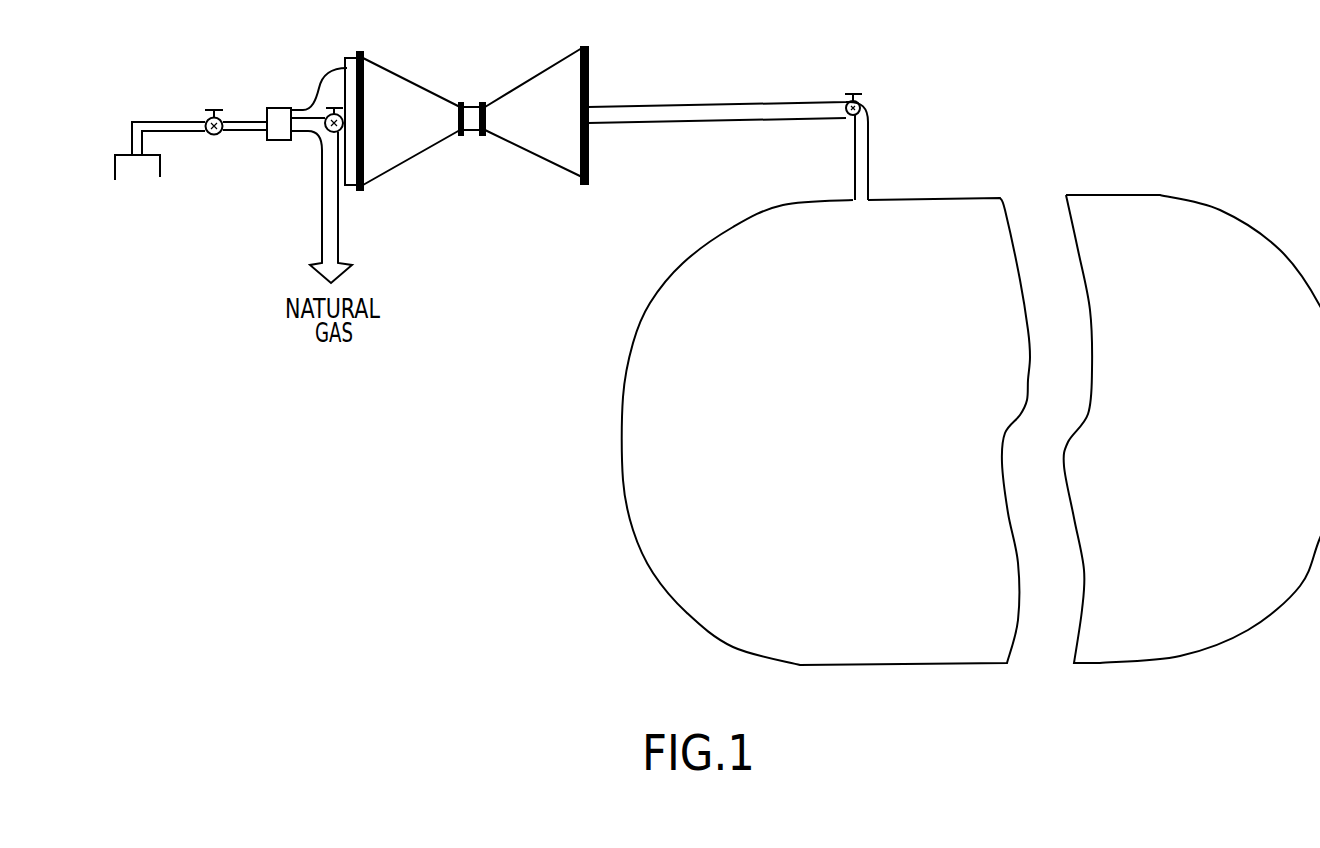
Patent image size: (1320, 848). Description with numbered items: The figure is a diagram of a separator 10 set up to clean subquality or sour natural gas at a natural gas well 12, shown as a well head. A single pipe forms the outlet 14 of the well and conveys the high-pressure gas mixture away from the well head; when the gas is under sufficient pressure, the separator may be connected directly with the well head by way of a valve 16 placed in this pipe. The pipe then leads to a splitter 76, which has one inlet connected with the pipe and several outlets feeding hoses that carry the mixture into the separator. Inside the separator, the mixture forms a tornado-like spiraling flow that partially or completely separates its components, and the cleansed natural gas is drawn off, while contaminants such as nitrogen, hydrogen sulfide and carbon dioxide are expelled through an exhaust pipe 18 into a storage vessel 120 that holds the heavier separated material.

The separator 10 is at (409, 63).
The natural gas well 12 is at (115, 156).
The outlet 14 is at (165, 122).
The valve 16 is at (214, 135).
The exhaust pipe 18 is at (732, 102).
The splitter 76 is at (280, 108).
The storage vessel 120 is at (945, 197).